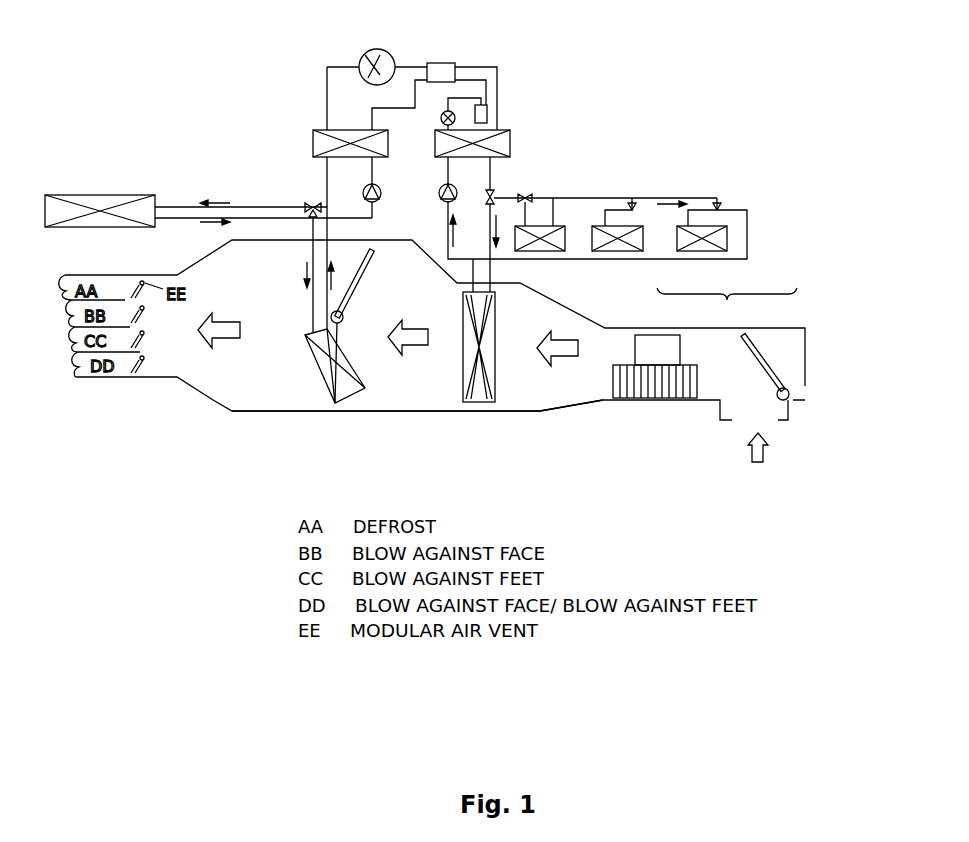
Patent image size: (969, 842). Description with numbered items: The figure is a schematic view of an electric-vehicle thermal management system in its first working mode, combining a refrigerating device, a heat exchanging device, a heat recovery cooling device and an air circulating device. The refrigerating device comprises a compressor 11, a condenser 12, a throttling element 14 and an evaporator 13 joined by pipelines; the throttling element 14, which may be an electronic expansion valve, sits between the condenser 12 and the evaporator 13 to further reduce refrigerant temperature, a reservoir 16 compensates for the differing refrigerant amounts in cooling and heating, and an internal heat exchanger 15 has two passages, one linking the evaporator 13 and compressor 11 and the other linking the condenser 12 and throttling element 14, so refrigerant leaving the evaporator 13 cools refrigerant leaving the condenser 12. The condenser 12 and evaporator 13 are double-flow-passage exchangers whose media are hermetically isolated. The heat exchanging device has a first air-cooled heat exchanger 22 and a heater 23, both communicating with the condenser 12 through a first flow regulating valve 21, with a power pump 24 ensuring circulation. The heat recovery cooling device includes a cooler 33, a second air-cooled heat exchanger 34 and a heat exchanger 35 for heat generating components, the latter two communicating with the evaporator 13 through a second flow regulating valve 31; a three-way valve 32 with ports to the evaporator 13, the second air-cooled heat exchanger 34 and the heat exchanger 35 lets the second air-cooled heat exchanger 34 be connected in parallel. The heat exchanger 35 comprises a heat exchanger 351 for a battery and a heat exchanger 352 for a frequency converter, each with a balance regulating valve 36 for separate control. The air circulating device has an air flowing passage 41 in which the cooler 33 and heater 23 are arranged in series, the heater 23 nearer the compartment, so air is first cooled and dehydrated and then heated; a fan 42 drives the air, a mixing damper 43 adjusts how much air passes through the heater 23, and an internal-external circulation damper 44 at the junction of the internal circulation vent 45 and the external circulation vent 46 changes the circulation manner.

The compressor 11 is at (366, 53).
The condenser 12 is at (322, 141).
The evaporator 13 is at (496, 140).
The throttling element 14 is at (452, 112).
The internal heat exchanger 15 is at (440, 63).
The reservoir 16 is at (482, 114).
The first flow regulating valve 21 is at (311, 203).
The first air-cooled heat exchanger 22 is at (107, 208).
The heater 23 is at (337, 401).
The power pump 24 is at (441, 187).
The second flow regulating valve 31 is at (492, 194).
The three-way valve 32 is at (527, 195).
The cooler 33 is at (480, 393).
The second air-cooled heat exchanger 34 is at (541, 250).
The heat exchanger for heat generating components 35 is at (727, 309).
The heat exchanger for a battery 351 is at (626, 247).
The heat exchanger for a frequency converter 352 is at (706, 247).
The balance regulating valve 36 is at (716, 200).
The air flowing passage 41 is at (540, 412).
The fan 42 is at (655, 385).
The mixing damper 43 is at (373, 256).
The internal-external circulation damper 44 is at (760, 365).
The internal circulation vent 45 is at (776, 406).
The external circulation vent 46 is at (795, 370).